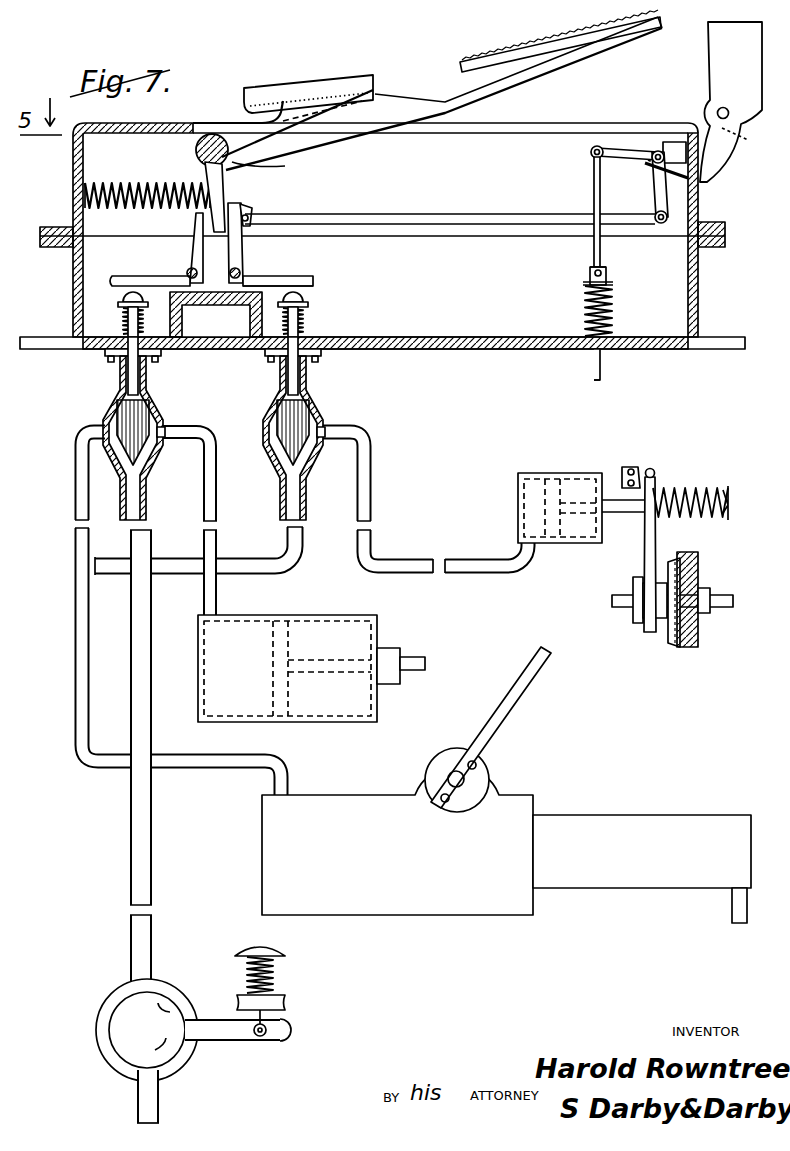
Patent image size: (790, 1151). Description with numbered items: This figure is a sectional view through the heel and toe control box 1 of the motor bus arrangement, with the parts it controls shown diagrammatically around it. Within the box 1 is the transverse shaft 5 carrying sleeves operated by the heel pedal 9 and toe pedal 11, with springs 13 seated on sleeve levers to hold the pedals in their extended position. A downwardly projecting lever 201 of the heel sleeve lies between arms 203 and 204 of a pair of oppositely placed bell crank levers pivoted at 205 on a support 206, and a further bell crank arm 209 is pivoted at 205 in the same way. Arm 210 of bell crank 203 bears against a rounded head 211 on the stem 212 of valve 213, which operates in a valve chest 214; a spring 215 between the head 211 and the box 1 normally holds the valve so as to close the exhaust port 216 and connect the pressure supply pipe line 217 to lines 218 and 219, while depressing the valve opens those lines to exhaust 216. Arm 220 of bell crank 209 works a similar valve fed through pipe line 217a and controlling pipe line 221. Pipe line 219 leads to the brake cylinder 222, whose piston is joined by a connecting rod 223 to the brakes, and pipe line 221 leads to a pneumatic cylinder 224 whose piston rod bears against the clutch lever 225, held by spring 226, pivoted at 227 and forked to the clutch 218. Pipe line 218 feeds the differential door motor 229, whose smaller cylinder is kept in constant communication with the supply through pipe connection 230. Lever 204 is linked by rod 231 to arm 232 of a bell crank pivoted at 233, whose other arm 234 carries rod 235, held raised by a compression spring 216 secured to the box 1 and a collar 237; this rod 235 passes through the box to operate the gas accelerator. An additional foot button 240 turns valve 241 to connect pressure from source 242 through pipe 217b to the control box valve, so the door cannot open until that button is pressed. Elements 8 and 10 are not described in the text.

The heel and toe control box 1 is at (422, 340).
The transverse shaft 5 is at (705, 107).
The pedal arm 8 is at (375, 96).
The heel pedal 9 is at (310, 86).
The lever arm 10 is at (440, 98).
The toe pedal 11 is at (500, 63).
The spring 13 is at (135, 175).
The lever of the heel sleeve 201 is at (225, 186).
The arm of bell crank lever 203 is at (190, 232).
The arm of bell crank lever 204 is at (250, 210).
The pivot 205 is at (182, 268).
The support 206 is at (300, 318).
The arm of bell crank lever 209 is at (242, 246).
The arm of bell crank 210 is at (112, 278).
The rounded head 211 is at (118, 298).
The stem 212 is at (146, 368).
The valve 213 is at (152, 412).
The valve chest 214 is at (165, 466).
The spring 215 is at (192, 314).
The exhaust port 216 is at (112, 393).
The pressure supply pipe line 217 is at (116, 573).
The pipe line 217a is at (276, 564).
The pipe 217b is at (152, 830).
The pipe line 218 is at (74, 516).
The pipe line 219 is at (209, 432).
The arm of bell crank 220 is at (303, 283).
The pipe line 221 is at (374, 502).
The brake cylinder 222 is at (355, 615).
The connecting rod 223 is at (414, 656).
The pneumatic cylinder 224 is at (536, 470).
The clutch lever 225 is at (660, 455).
The spring 226 is at (715, 486).
The pivot 227 is at (625, 462).
The motor 229 is at (520, 800).
The pipe connection 230 is at (735, 905).
The rod 231 is at (498, 216).
The arm of bell crank lever 232 is at (660, 200).
The pivot 233 is at (690, 176).
The arm of bell crank lever 234 is at (612, 146).
The rod 235 is at (594, 190).
The collar 237 is at (590, 274).
The foot button 240 is at (287, 950).
The valve 241 is at (178, 1058).
The source 242 is at (160, 1098).